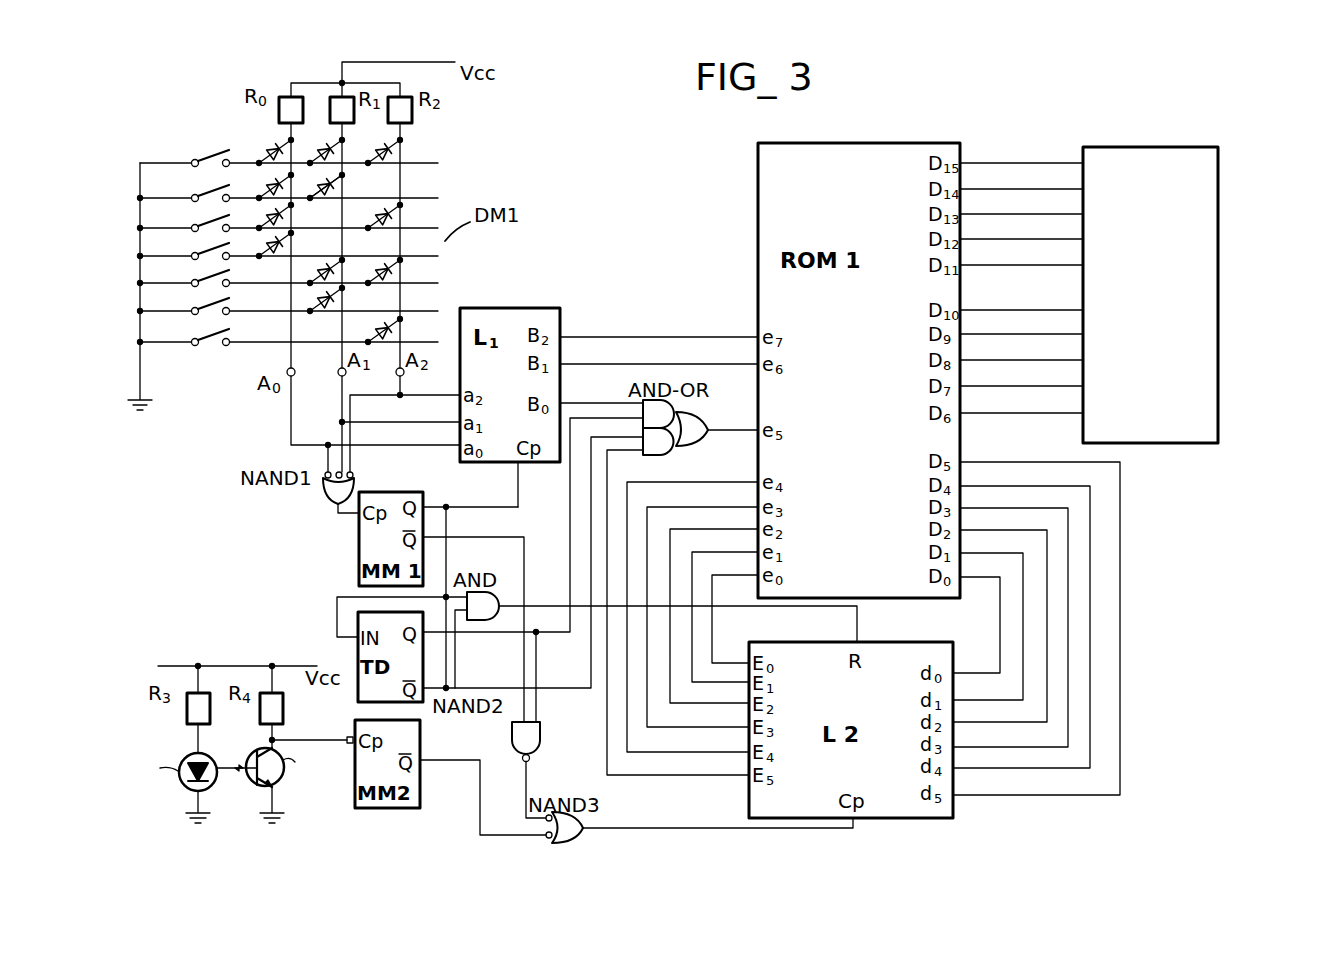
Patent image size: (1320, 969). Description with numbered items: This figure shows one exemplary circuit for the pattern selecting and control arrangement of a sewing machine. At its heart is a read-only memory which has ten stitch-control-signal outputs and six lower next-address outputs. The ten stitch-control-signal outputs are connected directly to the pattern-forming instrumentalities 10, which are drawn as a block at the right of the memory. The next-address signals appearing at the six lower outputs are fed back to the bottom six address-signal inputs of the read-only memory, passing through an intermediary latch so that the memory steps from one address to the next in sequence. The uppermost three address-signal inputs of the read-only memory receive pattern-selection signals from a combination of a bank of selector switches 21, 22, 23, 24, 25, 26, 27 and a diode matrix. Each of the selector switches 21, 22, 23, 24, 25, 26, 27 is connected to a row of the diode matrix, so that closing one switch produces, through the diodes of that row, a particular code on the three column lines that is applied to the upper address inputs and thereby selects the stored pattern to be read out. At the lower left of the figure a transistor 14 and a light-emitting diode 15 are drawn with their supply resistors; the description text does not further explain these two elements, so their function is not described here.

The pattern-forming instrumentalities 10 is at (1150, 295).
The transistor 14 is at (270, 773).
The light emitting diode 15 is at (173, 773).
The selector switch 21 is at (207, 150).
The selector switch 22 is at (207, 186).
The selector switch 23 is at (204, 217).
The selector switch 24 is at (204, 245).
The selector switch 25 is at (204, 272).
The selector switch 26 is at (204, 300).
The selector switch 27 is at (208, 349).